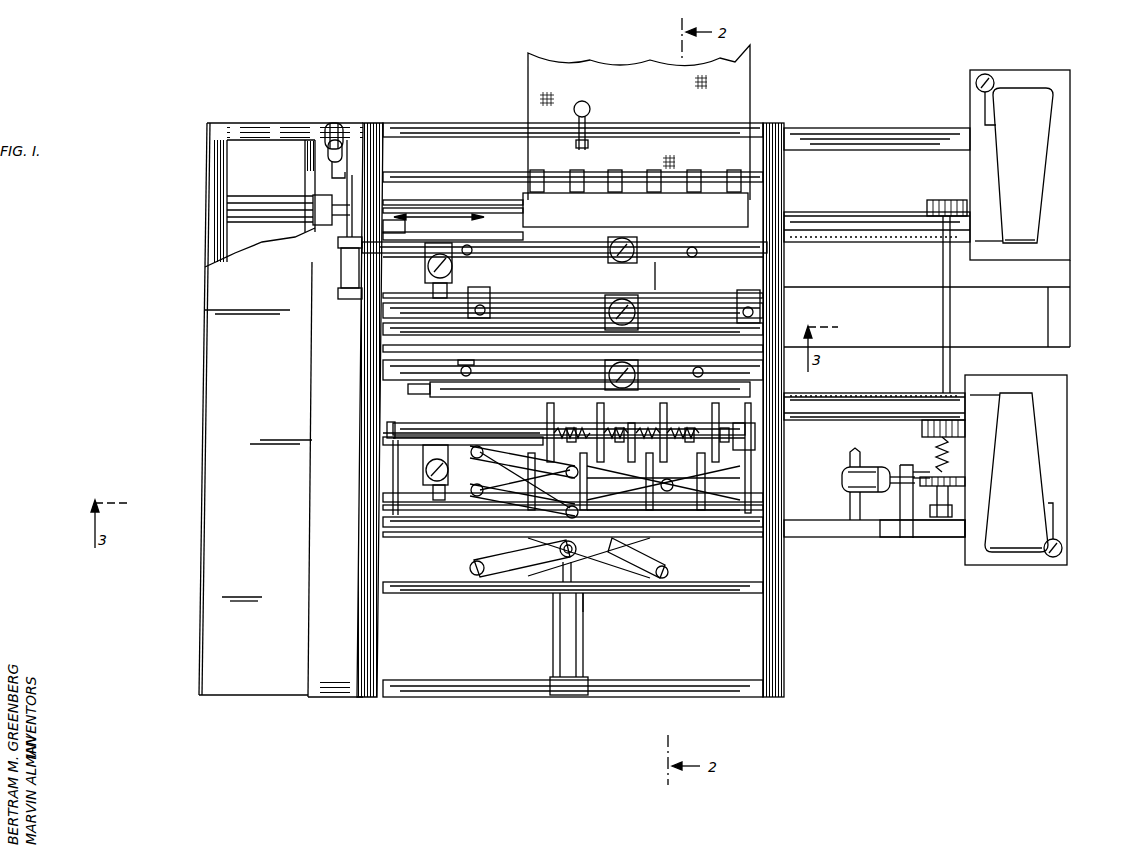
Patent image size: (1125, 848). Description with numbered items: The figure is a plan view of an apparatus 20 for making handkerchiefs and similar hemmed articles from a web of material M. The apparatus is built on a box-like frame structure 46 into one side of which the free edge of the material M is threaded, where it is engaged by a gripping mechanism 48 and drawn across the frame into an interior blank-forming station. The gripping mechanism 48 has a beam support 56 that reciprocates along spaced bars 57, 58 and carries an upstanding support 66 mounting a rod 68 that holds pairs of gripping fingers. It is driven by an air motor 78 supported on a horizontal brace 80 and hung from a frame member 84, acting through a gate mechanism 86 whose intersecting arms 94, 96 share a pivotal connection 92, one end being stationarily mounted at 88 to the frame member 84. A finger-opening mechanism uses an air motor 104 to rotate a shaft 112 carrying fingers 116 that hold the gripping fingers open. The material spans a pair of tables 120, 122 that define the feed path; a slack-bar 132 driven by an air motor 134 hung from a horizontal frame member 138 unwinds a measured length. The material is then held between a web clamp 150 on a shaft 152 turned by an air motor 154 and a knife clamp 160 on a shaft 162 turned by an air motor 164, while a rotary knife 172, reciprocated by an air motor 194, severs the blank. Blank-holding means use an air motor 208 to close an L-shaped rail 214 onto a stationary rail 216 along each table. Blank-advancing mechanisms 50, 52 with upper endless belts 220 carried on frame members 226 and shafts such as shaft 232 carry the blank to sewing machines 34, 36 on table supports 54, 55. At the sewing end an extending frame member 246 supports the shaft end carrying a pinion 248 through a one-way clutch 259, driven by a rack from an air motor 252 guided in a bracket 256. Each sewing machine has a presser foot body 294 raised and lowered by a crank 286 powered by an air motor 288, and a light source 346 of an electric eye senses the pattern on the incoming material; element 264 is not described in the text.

The apparatus 20 is at (246, 58).
The box-like frame structure 46 is at (213, 123).
The air motor 194 is at (245, 205).
The air motor 154 is at (333, 125).
The air motor 164 is at (340, 272).
The material M is at (628, 64).
The light source 346 is at (584, 102).
The rotatable shaft 152 is at (440, 174).
The rotatable shaft 162 is at (462, 198).
The web clamp 150 is at (575, 178).
The rotary knife 172 is at (410, 205).
The knife clamp 160 is at (635, 210).
The air motor 208 is at (622, 240).
The air motor 104 is at (453, 267).
The fingers 116 is at (655, 265).
The shaft 112 is at (385, 300).
The slack-bar 132 is at (570, 290).
The air motor 134 is at (628, 295).
The L-shaped rail 214 is at (715, 238).
The horizontal frame member 138 is at (573, 341).
The stationary rail 216 is at (408, 390).
The gripping mechanism 48 is at (546, 414).
The rod 68 is at (450, 430).
The beam support 56 is at (410, 426).
The upstanding support 66 is at (387, 436).
The bar 58 is at (766, 513).
The bar 57 is at (403, 515).
The gate mechanism 86 is at (464, 566).
The arm 94 is at (636, 556).
The pivotal connection 92 is at (560, 551).
The arm 96 is at (500, 585).
The frame member 84 is at (440, 596).
The stationary mounting 88 is at (588, 606).
The air motor 78 is at (556, 655).
The horizontal brace 80 is at (452, 698).
The table support 54 is at (1070, 190).
The table support 55 is at (1062, 441).
The table 122 is at (897, 275).
The table 120 is at (893, 334).
The blank-advancing mechanism 52 is at (852, 211).
The frame member 226 is at (820, 212).
The upper endless belt 220 is at (814, 237).
The blank-advancing mechanism 50 is at (838, 414).
The gear 264 is at (930, 206).
The shaft 232 is at (943, 312).
The one-way rotation clutch unit 259 is at (958, 460).
The pinion 248 is at (962, 481).
The air motor 252 is at (843, 480).
The bracket 256 is at (905, 540).
The extending frame member 246 is at (828, 538).
The sewing machine 34 is at (1023, 165).
The sewing machine 36 is at (1016, 472).
The air motor 288 is at (975, 82).
The crank 286 is at (980, 103).
The body of presser foot 294 is at (990, 240).